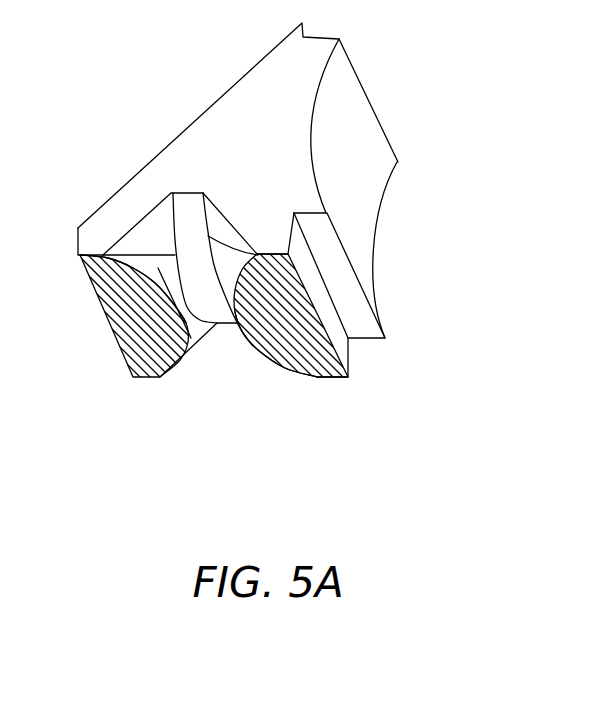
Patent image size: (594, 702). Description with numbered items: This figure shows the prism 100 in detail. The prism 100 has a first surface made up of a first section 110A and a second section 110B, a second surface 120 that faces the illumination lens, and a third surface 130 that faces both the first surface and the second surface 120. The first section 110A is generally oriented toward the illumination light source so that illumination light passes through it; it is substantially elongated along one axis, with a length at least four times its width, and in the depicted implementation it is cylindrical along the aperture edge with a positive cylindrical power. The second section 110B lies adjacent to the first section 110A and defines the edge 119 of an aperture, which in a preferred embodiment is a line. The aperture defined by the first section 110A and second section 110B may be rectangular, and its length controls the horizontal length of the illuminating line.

The prism 100 is at (487, 131).
The third surface 130 is at (194, 122).
The second surface 120 is at (355, 127).
The first section 110A is at (188, 227).
The second section 110B is at (180, 335).
The edge 119 is at (172, 256).